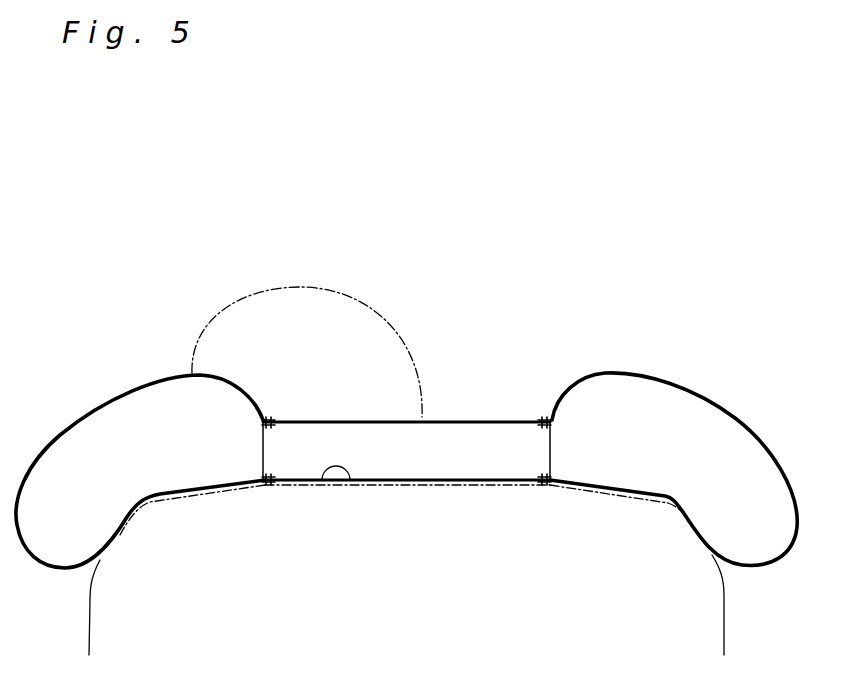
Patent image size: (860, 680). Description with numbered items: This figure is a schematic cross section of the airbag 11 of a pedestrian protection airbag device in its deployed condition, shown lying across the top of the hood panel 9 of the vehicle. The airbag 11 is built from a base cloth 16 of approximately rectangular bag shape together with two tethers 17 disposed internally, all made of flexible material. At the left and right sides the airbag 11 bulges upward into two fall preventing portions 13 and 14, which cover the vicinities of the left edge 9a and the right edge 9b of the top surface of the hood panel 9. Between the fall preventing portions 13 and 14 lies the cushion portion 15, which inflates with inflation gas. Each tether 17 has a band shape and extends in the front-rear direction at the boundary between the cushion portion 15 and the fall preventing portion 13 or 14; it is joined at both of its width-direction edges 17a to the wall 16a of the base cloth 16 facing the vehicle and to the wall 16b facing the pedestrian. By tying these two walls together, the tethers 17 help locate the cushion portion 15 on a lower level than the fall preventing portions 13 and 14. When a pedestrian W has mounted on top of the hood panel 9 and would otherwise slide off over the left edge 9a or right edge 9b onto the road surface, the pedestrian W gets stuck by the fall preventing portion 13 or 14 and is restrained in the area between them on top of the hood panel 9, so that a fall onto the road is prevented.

The pedestrian W is at (277, 272).
The hood panel 9 is at (405, 484).
The left edge 9a is at (173, 497).
The right edge 9b is at (640, 507).
The airbag 11 is at (612, 362).
The fall preventing portion 13 is at (105, 400).
The fall preventing portion 14 is at (676, 383).
The cushion portion 15 is at (490, 420).
The base cloth 16 is at (398, 425).
The wall 16a is at (320, 483).
The wall 16b is at (457, 420).
The tether 17 is at (263, 448).
The edges 17a is at (268, 426).